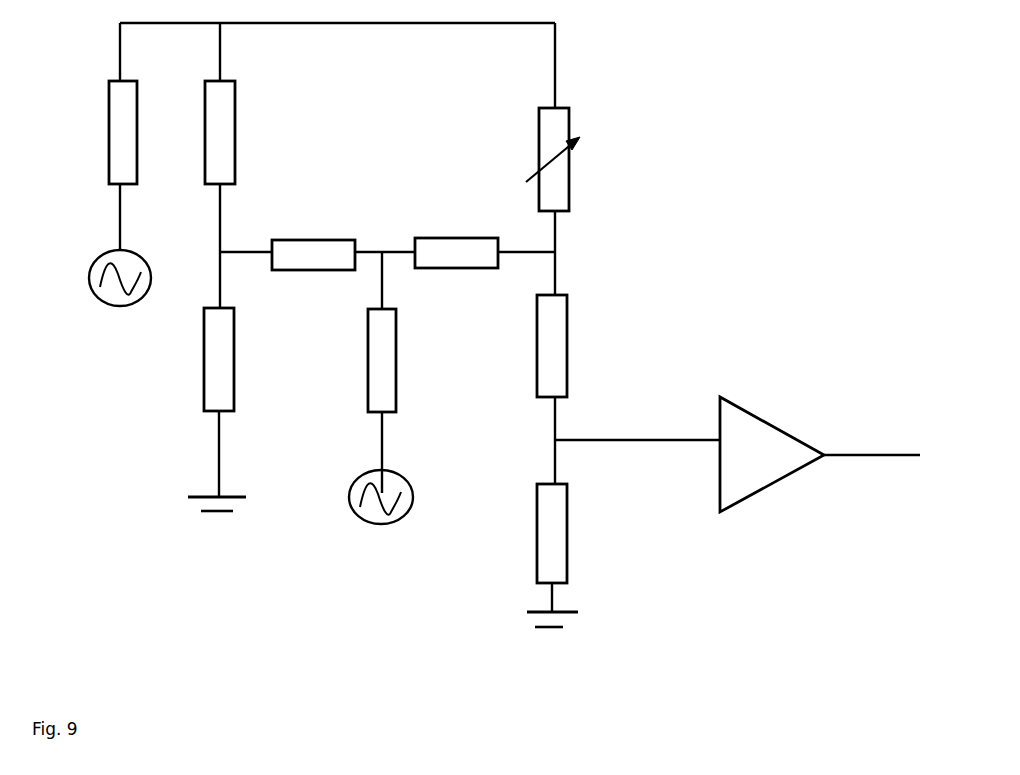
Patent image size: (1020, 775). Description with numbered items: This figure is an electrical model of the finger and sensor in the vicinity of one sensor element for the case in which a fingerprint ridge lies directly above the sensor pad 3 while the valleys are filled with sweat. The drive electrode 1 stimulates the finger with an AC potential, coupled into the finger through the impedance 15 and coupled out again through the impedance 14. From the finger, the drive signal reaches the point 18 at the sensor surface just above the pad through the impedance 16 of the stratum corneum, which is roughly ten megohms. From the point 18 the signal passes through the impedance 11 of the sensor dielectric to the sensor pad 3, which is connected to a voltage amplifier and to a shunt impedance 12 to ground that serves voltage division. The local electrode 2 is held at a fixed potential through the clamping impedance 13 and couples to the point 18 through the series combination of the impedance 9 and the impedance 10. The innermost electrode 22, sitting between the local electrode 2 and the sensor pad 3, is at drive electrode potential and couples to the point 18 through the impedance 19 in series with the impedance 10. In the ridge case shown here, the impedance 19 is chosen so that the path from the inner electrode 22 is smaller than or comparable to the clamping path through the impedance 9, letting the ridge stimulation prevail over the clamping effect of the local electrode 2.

The drive electrode 1 is at (115, 297).
The local electrode 2 is at (235, 246).
The sensor pad 3 is at (624, 440).
The impedance 9 is at (308, 251).
The impedance 10 is at (455, 254).
The impedance through the sensor dielectric 11 is at (604, 346).
The shunt impedance 12 is at (588, 555).
The clamping impedance 13 is at (242, 409).
The impedance 14 is at (247, 132).
The impedance 15 is at (102, 132).
The impedance through the stratum corneum 16 is at (594, 159).
The point at the sensor surface 18 is at (547, 253).
The impedance 19 is at (412, 360).
The inner electrode 22 is at (381, 517).